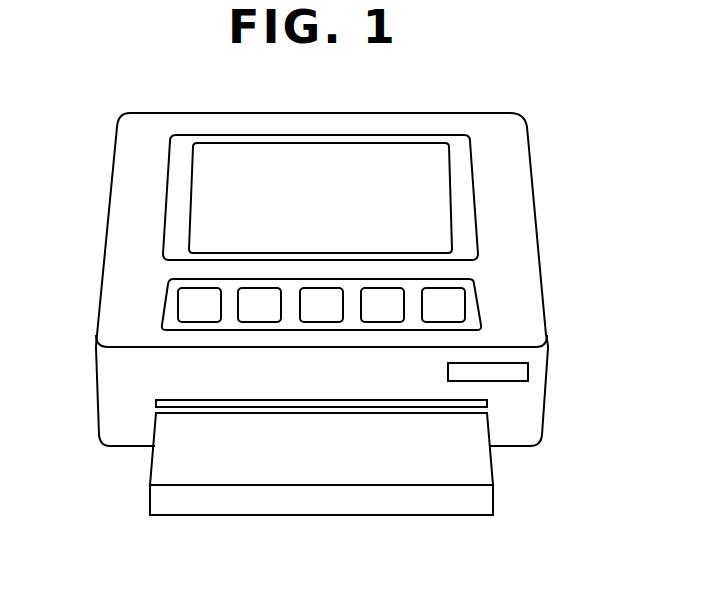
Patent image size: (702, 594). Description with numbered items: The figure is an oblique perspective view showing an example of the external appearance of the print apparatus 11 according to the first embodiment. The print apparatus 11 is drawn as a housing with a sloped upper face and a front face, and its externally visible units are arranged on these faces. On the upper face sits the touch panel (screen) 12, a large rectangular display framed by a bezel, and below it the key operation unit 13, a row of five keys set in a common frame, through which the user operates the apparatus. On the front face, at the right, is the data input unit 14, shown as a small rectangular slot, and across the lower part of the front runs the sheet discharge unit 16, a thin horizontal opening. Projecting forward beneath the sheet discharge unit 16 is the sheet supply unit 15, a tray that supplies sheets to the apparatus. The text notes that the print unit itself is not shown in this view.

The print apparatus 11 is at (528, 139).
The touch panel (screen) 12 is at (198, 160).
The key operation unit 13 is at (163, 318).
The data input unit 14 is at (528, 372).
The sheet supply unit 15 is at (163, 466).
The sheet discharge unit 16 is at (157, 401).